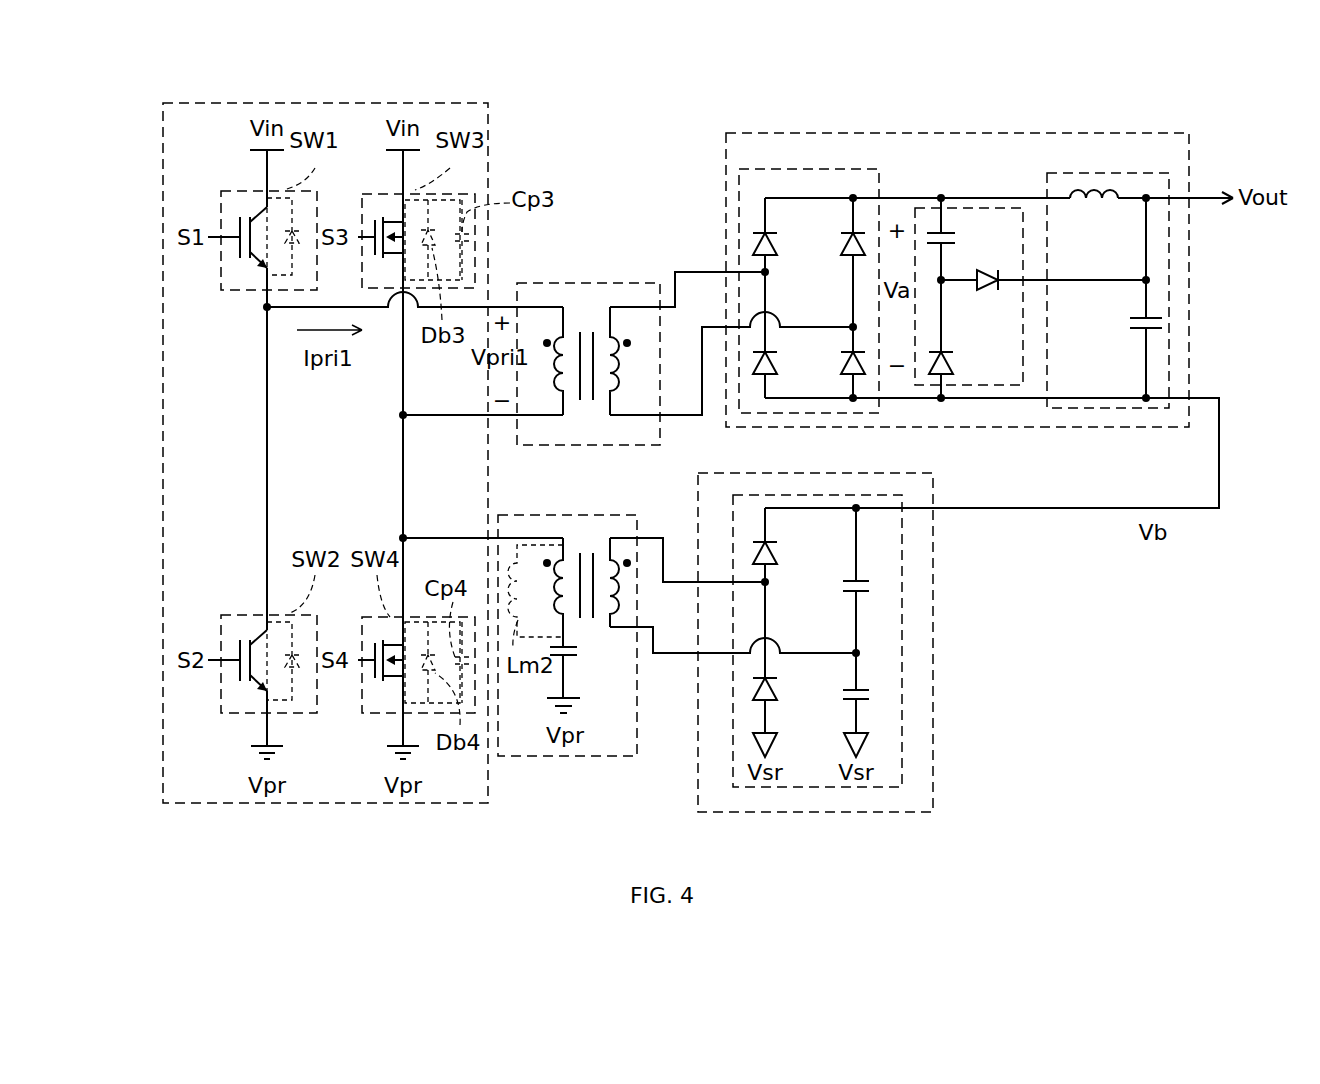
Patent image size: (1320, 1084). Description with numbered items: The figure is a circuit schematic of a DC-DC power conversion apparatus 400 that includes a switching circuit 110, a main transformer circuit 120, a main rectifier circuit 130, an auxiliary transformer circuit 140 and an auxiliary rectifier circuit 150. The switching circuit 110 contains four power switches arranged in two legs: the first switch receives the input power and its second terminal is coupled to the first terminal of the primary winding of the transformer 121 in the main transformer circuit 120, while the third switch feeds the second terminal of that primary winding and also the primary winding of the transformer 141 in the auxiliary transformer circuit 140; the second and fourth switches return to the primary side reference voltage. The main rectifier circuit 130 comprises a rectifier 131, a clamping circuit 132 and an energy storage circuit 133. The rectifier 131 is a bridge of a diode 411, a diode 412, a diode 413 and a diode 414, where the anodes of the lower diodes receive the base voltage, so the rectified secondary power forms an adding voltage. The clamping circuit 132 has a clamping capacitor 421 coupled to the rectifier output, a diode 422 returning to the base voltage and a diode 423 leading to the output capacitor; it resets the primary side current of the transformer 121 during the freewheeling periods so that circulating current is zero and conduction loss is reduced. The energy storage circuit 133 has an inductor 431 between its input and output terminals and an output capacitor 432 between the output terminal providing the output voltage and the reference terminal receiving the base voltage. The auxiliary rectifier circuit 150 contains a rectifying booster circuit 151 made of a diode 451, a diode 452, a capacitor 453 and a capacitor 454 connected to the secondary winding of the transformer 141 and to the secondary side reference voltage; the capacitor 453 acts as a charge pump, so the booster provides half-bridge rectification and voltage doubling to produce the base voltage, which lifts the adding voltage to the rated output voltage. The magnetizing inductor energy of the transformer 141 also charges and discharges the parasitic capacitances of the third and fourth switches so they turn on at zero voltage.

The switching circuit 110 is at (285, 805).
The main transformer circuit 120 is at (643, 281).
The transformer 121 is at (590, 332).
The main rectifier circuit 130 is at (1145, 133).
The rectifier 131 is at (767, 169).
The clamping circuit 132 is at (978, 207).
The energy storage circuit 133 is at (1072, 173).
The auxiliary transformer circuit 140 is at (575, 757).
The transformer 141 is at (585, 622).
The auxiliary rectifier circuit 150 is at (933, 713).
The rectifying booster circuit 151 is at (903, 665).
The diode 411 is at (780, 247).
The diode 412 is at (778, 360).
The diode 413 is at (833, 243).
The diode 414 is at (838, 365).
The clamping capacitor 421 is at (955, 237).
The diode 422 is at (955, 358).
The diode 423 is at (993, 297).
The inductor 431 is at (1097, 205).
The output capacitor 432 is at (1128, 320).
The diode 451 is at (782, 553).
The diode 452 is at (777, 687).
The capacitor 453 is at (842, 585).
The capacitor 454 is at (842, 695).
The DC-DC power conversion apparatus 400 is at (1150, 768).